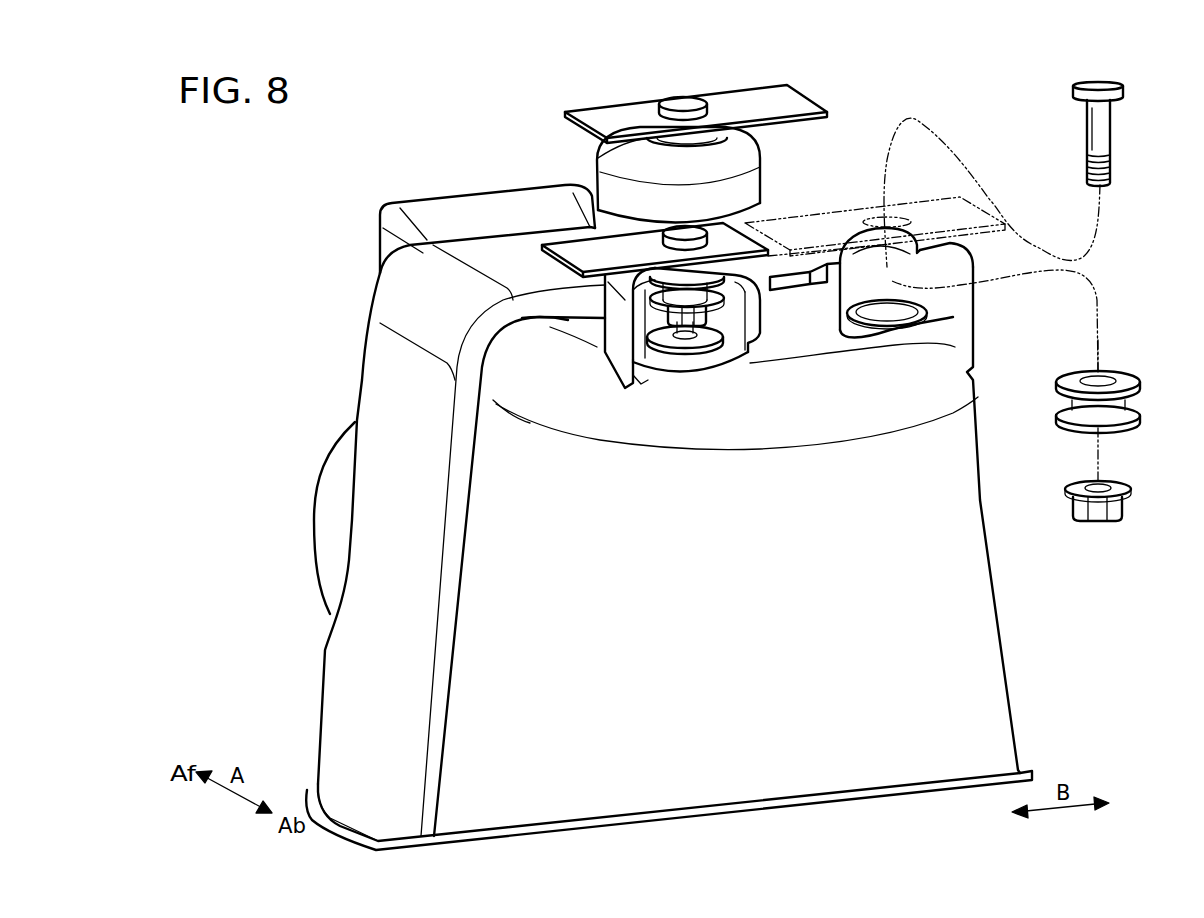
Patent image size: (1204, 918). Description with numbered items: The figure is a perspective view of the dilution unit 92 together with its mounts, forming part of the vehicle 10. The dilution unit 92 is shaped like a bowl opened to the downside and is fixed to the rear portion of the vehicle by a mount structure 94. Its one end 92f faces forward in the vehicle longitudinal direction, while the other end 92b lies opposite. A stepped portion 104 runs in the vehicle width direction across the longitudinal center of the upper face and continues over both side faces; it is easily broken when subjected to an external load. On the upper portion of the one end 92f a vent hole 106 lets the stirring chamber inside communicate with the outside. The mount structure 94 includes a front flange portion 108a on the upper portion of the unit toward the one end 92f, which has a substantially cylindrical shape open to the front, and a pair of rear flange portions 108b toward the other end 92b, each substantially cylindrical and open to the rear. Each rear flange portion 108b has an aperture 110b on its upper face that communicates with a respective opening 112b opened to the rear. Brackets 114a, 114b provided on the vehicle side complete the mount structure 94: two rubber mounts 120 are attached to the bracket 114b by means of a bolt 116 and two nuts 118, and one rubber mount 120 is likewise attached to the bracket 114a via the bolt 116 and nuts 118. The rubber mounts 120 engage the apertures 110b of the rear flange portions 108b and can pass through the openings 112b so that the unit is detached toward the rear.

The straddled vehicle (motorcycle) 10 is at (291, 193).
The dilution unit 92 is at (340, 330).
The other end of the dilution unit 92b is at (977, 645).
The one end of the dilution unit 92f is at (357, 398).
The mount structure 94 is at (548, 113).
The stepped portion 104 is at (457, 472).
The vent hole 106 is at (444, 214).
The front flange portion 108a is at (605, 150).
The rear flange portions 108b is at (853, 233).
The aperture 110b is at (893, 245).
The opening 112b is at (697, 296).
The bracket 114a is at (617, 112).
The bracket 114b is at (540, 249).
The bolt 116 is at (680, 102).
The nuts 118 is at (688, 314).
The rubber mounts 120 is at (710, 138).